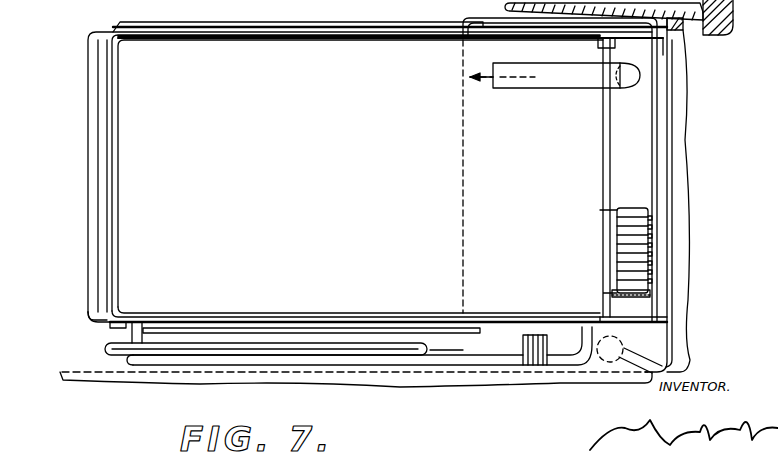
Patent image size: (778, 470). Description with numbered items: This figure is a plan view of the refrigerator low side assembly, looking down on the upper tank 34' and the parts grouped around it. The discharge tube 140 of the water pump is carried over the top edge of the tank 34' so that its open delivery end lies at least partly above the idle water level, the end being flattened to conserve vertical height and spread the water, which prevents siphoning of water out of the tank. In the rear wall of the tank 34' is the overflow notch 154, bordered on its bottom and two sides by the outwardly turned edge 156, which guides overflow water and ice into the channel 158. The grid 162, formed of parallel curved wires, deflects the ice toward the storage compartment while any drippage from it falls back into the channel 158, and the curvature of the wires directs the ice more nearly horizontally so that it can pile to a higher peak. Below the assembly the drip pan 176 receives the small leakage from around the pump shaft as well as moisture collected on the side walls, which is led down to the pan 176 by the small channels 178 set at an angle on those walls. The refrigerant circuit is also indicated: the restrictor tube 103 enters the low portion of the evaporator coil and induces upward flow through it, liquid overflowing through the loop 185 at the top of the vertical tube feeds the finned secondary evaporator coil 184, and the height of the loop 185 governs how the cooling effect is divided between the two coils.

The upper tank 34' is at (389, 176).
The small channels 178 is at (333, 28).
The drip pan 176 is at (505, 6).
The discharge tube 140 is at (555, 75).
The overflow notch 154 is at (603, 228).
The channel 158 is at (626, 208).
The grid 162 is at (650, 248).
The outwardly turned edge 156 is at (612, 291).
The loop 185 is at (288, 350).
The restrictor tube 103 is at (432, 352).
The finned secondary evaporator coil 184 is at (394, 350).